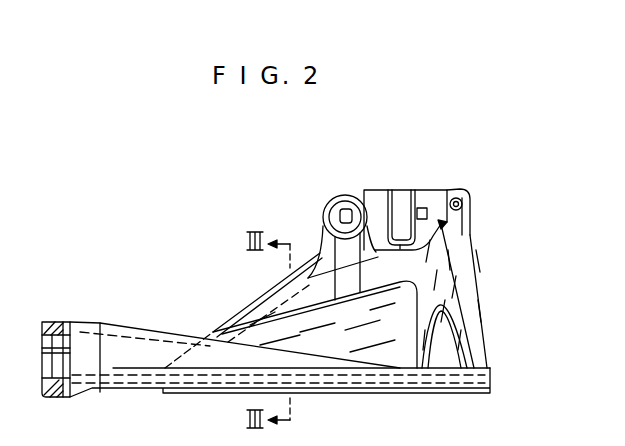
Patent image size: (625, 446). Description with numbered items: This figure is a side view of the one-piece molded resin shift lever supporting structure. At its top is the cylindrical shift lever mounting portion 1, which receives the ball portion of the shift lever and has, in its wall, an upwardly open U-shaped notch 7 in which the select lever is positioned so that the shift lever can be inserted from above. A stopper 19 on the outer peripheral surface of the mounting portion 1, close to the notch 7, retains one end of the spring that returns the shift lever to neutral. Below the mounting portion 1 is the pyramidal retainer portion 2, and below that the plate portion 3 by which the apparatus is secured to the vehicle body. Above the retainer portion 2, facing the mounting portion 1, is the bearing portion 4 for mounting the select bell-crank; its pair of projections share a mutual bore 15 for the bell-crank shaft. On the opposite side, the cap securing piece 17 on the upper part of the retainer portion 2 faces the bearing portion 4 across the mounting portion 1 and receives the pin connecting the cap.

The shift lever mounting portion 1 is at (376, 203).
The retainer portion 2 is at (471, 312).
The plate portion 3 is at (142, 386).
The bearing portion 4 is at (338, 197).
The U-shaped notch 7 is at (391, 203).
The mutual bore 15 is at (338, 215).
The cap securing piece 17 is at (462, 203).
The stopper 19 is at (422, 209).